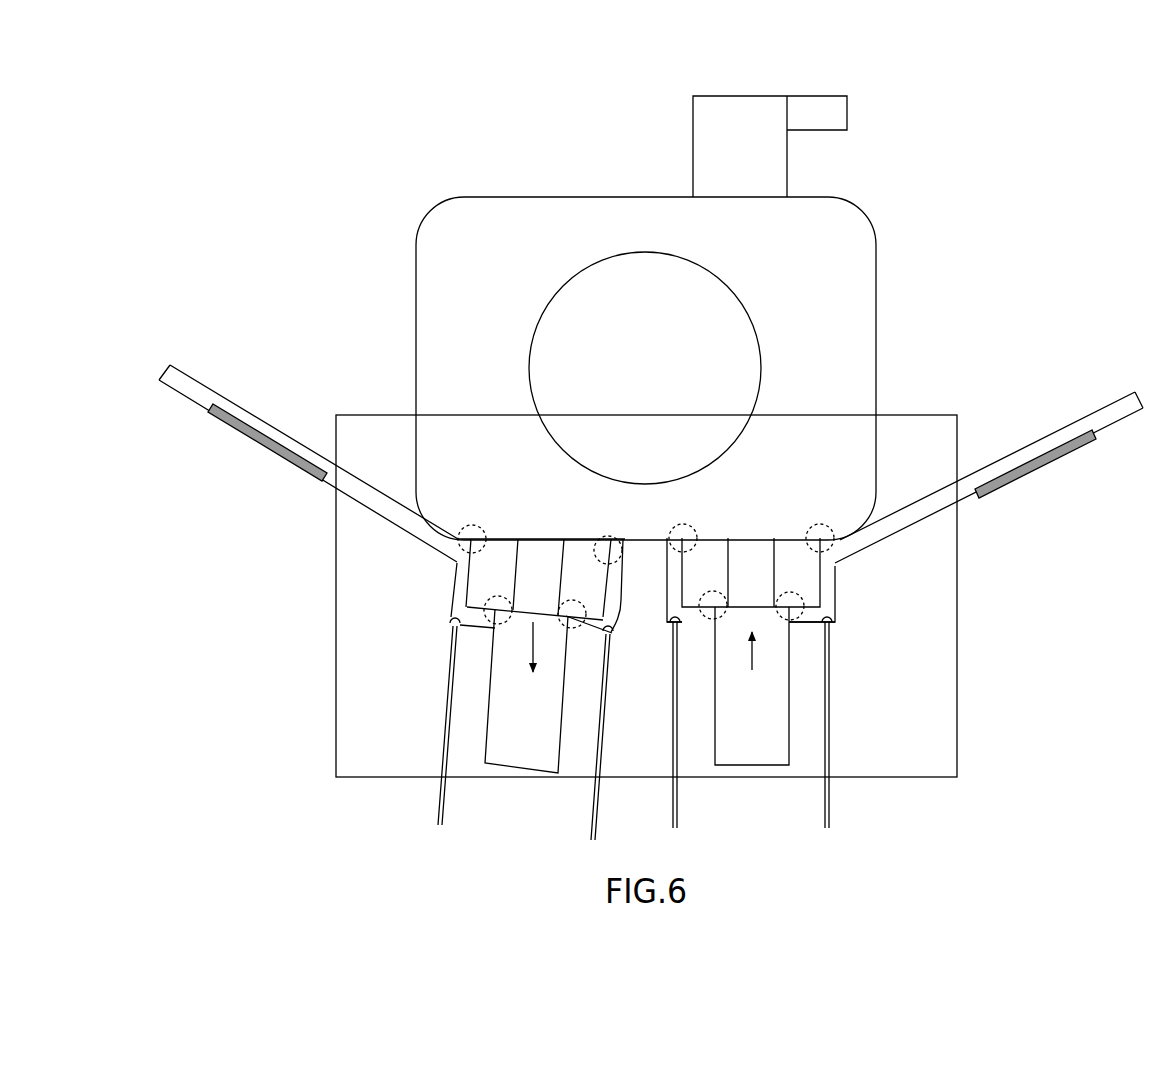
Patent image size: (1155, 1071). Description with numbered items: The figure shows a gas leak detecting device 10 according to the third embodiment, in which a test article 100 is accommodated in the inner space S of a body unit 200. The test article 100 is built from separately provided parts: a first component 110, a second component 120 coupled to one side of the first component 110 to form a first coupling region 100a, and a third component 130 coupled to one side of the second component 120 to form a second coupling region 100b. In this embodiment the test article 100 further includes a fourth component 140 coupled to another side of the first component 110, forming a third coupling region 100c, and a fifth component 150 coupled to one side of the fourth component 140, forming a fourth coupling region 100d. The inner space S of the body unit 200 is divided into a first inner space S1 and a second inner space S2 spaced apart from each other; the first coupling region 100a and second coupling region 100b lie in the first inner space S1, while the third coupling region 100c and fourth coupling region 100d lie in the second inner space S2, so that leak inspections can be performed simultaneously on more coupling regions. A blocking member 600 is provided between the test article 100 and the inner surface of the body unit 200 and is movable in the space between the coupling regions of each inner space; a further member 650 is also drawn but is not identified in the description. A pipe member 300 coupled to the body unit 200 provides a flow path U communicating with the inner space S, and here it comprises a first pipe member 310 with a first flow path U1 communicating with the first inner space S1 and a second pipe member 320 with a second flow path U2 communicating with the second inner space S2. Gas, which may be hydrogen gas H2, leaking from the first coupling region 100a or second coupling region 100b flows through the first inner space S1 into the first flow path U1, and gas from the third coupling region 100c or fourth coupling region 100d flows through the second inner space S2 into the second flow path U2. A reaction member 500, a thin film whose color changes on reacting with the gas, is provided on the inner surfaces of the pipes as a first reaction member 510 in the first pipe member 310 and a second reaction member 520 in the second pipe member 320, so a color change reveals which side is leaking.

The gas leak detecting device 10 is at (371, 80).
The test article 100 is at (657, 469).
The first component 110 is at (840, 302).
The second component 120 is at (485, 578).
The third component 130 is at (503, 675).
The fourth component 140 is at (800, 572).
The fifth component 150 is at (770, 658).
The first coupling region 100a is at (472, 524).
The second coupling region 100b is at (485, 598).
The third coupling region 100c is at (820, 524).
The fourth coupling region 100d is at (803, 600).
The body unit 200 is at (907, 760).
The pipe member 300 is at (651, 301).
The first pipe member 310 is at (308, 440).
The second pipe member 320 is at (989, 449).
The reaction member 500 is at (1073, 140).
The first reaction member 510 is at (260, 448).
The second reaction member 520 is at (1047, 463).
The blocking member 600 is at (823, 618).
The lead wire 650 is at (832, 723).
The inner space S is at (953, 55).
The first inner space S1 is at (621, 602).
The second inner space S2 is at (675, 592).
The flow path U is at (660, 336).
The first flow path U1 is at (356, 491).
The second flow path U2 is at (921, 506).
The height direction H2 is at (640, 667).